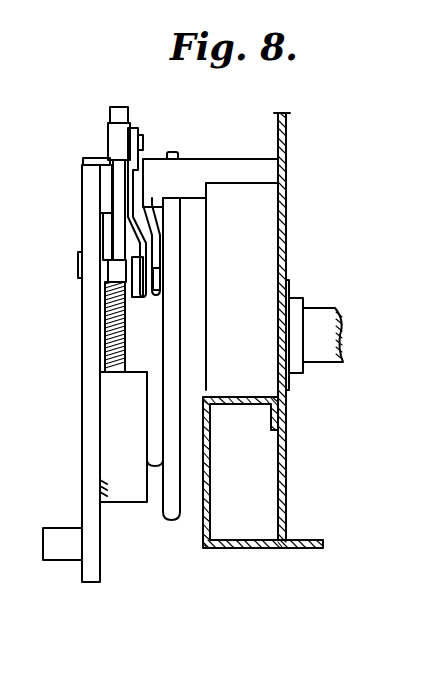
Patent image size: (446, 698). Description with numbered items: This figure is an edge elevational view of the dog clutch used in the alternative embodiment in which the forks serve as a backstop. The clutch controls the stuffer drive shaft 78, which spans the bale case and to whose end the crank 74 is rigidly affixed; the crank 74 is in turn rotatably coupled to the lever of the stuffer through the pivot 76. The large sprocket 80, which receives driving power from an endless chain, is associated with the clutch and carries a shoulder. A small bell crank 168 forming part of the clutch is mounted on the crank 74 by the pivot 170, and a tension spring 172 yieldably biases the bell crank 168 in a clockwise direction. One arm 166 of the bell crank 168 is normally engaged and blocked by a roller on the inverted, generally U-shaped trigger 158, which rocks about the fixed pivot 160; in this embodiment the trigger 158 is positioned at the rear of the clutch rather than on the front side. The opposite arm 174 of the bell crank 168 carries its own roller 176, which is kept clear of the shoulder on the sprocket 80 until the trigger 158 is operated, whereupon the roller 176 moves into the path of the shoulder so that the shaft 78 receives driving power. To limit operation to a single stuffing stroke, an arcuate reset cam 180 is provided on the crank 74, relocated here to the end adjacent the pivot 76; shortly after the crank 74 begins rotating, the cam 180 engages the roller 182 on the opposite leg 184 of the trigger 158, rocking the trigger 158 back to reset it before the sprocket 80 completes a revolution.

The crank 74 is at (83, 452).
The pivot 76 is at (44, 545).
The drive shaft 78 is at (333, 320).
The sprocket 80 is at (170, 385).
The trigger 158 is at (155, 150).
The fixed pivot 160 is at (157, 180).
The arm 166 is at (113, 190).
The bell crank 168 is at (95, 214).
The pivot 170 is at (80, 262).
The tension spring 172 is at (108, 330).
The arm 174 is at (147, 233).
The roller 176 is at (137, 298).
The reset cam 180 is at (137, 500).
The roller 182 is at (113, 133).
The leg 184 is at (137, 132).